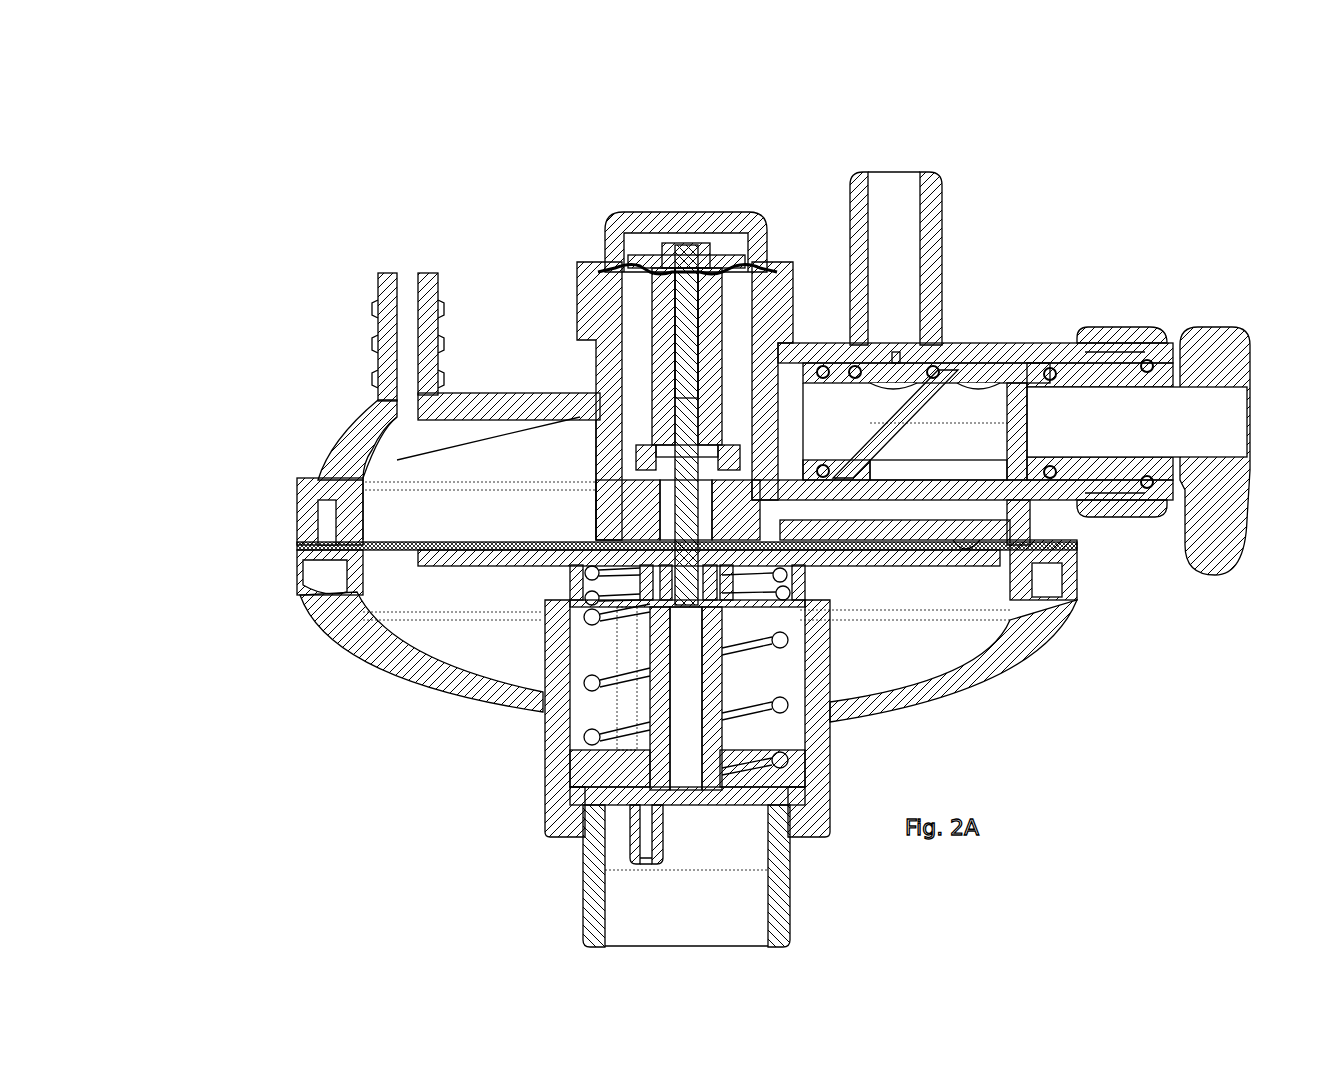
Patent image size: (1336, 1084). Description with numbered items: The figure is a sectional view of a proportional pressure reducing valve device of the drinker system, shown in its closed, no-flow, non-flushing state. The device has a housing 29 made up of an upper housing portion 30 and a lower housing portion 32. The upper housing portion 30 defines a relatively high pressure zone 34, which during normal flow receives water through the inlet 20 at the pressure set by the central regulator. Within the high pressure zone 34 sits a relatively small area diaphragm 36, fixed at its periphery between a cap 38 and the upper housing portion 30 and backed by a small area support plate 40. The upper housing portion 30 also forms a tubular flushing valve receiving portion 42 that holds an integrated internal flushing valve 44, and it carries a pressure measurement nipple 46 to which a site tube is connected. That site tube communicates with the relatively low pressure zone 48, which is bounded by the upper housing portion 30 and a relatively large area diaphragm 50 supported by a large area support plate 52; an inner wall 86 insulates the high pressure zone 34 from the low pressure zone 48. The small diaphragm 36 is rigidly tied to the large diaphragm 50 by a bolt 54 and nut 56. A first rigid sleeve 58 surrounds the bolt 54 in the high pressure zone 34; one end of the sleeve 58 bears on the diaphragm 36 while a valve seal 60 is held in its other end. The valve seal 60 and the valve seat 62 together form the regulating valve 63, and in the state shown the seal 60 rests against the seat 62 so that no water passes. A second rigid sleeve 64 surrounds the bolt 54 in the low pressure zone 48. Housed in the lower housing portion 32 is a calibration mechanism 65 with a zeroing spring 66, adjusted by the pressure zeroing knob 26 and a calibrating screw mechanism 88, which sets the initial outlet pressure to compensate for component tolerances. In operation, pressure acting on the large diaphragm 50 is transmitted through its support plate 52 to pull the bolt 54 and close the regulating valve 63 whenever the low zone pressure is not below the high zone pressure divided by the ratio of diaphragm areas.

The inlet 20 is at (920, 172).
The pressure zeroing knob 26 is at (782, 903).
The housing 29 is at (297, 507).
The upper housing portion 30 is at (353, 465).
The lower housing portion 32 is at (955, 675).
The high pressure zone 34 is at (785, 440).
The small area diaphragm 36 is at (606, 252).
The cap 38 is at (660, 216).
The small area support plate 40 is at (640, 250).
The flushing valve receiving portion 42 is at (1060, 345).
The flushing valve 44 is at (1243, 513).
The pressure measurement nipple 46 is at (372, 268).
The low pressure zone 48 is at (436, 507).
The large area diaphragm 50 is at (408, 549).
The large area support plate 52 is at (432, 565).
The bolt 54 is at (686, 250).
The nut 56 is at (660, 602).
The first rigid sleeve 58 is at (720, 395).
The valve seal 60 is at (650, 447).
The valve seat 62 is at (655, 470).
The regulating valve 63 is at (640, 430).
The second rigid sleeve 64 is at (745, 535).
The calibration mechanism 65 is at (528, 792).
The calibration spring 66 is at (778, 718).
The inner wall 86 is at (580, 453).
The calibrating screw mechanism 88 is at (690, 770).